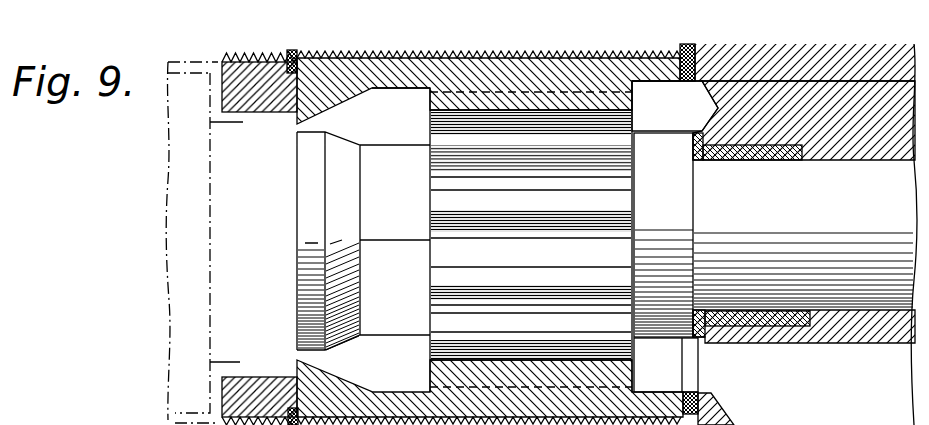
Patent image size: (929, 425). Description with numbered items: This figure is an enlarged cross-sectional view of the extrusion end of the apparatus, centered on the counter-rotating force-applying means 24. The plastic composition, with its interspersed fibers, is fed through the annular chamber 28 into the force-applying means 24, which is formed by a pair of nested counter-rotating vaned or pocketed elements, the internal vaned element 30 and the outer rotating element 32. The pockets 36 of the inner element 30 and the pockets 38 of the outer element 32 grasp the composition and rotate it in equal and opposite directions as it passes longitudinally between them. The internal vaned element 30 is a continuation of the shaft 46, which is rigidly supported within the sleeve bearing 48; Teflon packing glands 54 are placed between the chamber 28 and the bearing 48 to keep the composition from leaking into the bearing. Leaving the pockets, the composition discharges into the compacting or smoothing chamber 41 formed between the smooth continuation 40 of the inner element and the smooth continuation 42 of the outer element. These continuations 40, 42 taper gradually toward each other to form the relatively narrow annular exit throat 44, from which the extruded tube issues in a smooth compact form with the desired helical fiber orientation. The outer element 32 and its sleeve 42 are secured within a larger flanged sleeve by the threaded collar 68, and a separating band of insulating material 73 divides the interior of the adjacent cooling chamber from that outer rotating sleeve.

The counter-rotating force-applying means 24 is at (537, 261).
The annular chamber 28 is at (683, 113).
The internal vaned element 30 is at (446, 228).
The outer rotating element 32 is at (432, 106).
The pockets 36 is at (450, 184).
The pockets 38 is at (455, 368).
The smooth continuation 40 is at (384, 143).
The compacting or smoothing chamber 41 is at (378, 127).
The smooth continuation 42 is at (391, 90).
The annular exit throat 44 is at (298, 129).
The shaft 46 is at (817, 233).
The sleeve bearing 48 is at (747, 160).
The packing glands 54 is at (703, 63).
The threaded collar 68 is at (232, 399).
The separating band of insulating material 73 is at (210, 118).